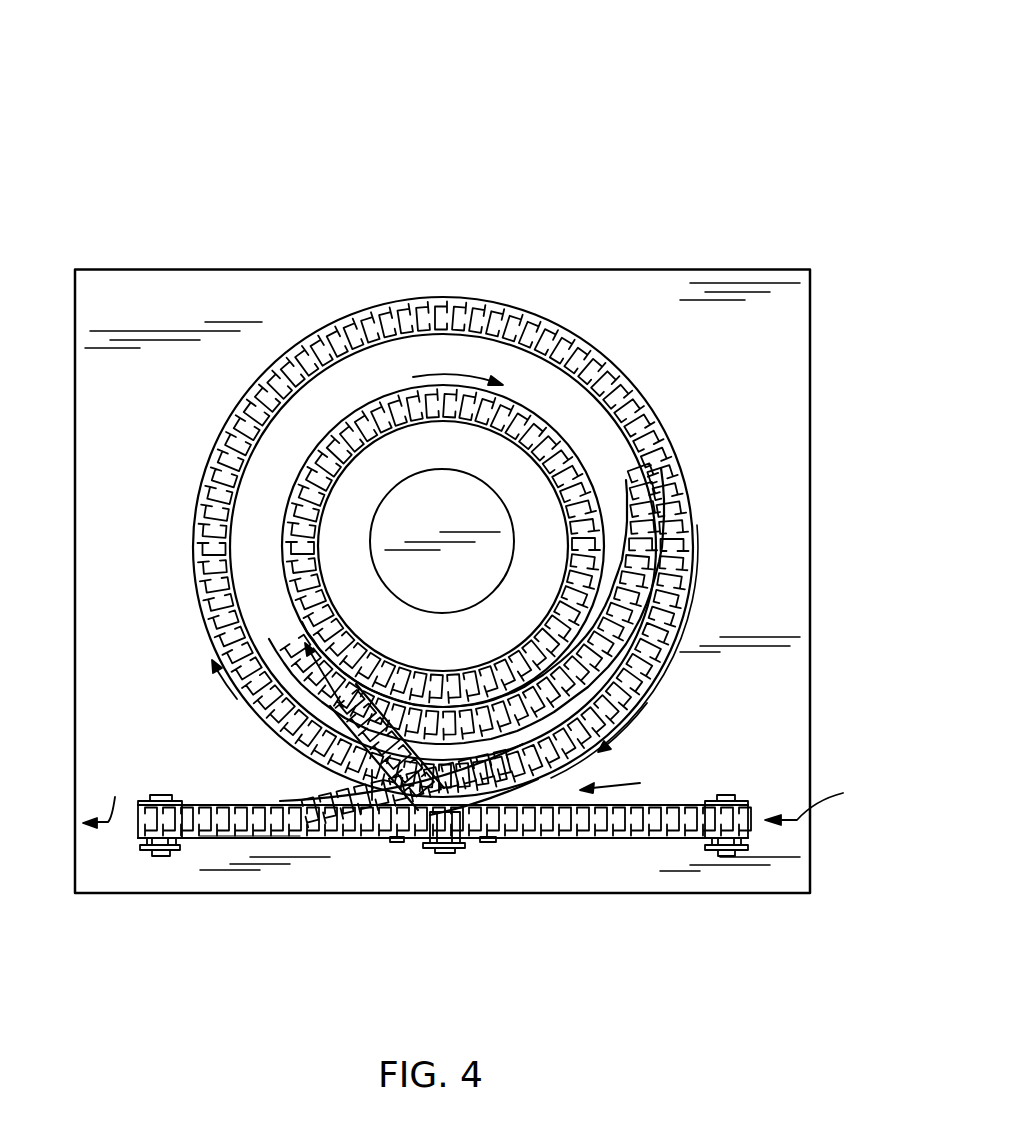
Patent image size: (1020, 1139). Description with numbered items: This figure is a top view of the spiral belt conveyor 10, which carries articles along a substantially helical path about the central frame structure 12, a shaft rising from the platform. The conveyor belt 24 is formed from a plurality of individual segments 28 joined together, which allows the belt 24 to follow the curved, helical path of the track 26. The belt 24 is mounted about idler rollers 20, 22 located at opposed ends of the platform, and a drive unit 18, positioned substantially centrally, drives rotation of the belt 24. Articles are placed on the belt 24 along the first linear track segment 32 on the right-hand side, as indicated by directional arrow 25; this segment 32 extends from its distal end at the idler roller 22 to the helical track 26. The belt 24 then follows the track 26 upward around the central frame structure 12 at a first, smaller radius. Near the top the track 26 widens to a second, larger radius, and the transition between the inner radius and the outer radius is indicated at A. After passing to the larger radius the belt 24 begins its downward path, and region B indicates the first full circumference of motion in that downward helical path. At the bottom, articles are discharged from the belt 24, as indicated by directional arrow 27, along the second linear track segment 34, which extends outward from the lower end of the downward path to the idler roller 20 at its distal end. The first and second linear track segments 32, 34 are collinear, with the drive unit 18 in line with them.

The spiral belt conveyor 10 is at (60, 92).
The central frame structure 12 is at (414, 478).
The drive unit 18 is at (445, 854).
The idler roller 20 is at (163, 857).
The idler roller 22 is at (727, 857).
The conveyor belt 24 is at (222, 805).
The directional arrow 25 is at (819, 797).
The helical track 26 is at (693, 572).
The directional arrow 27 is at (107, 800).
The individual segments 28 is at (665, 634).
The first linear track segment 32 is at (680, 806).
The second linear track segment 34 is at (250, 838).
The transition A is at (557, 684).
The region B is at (345, 770).